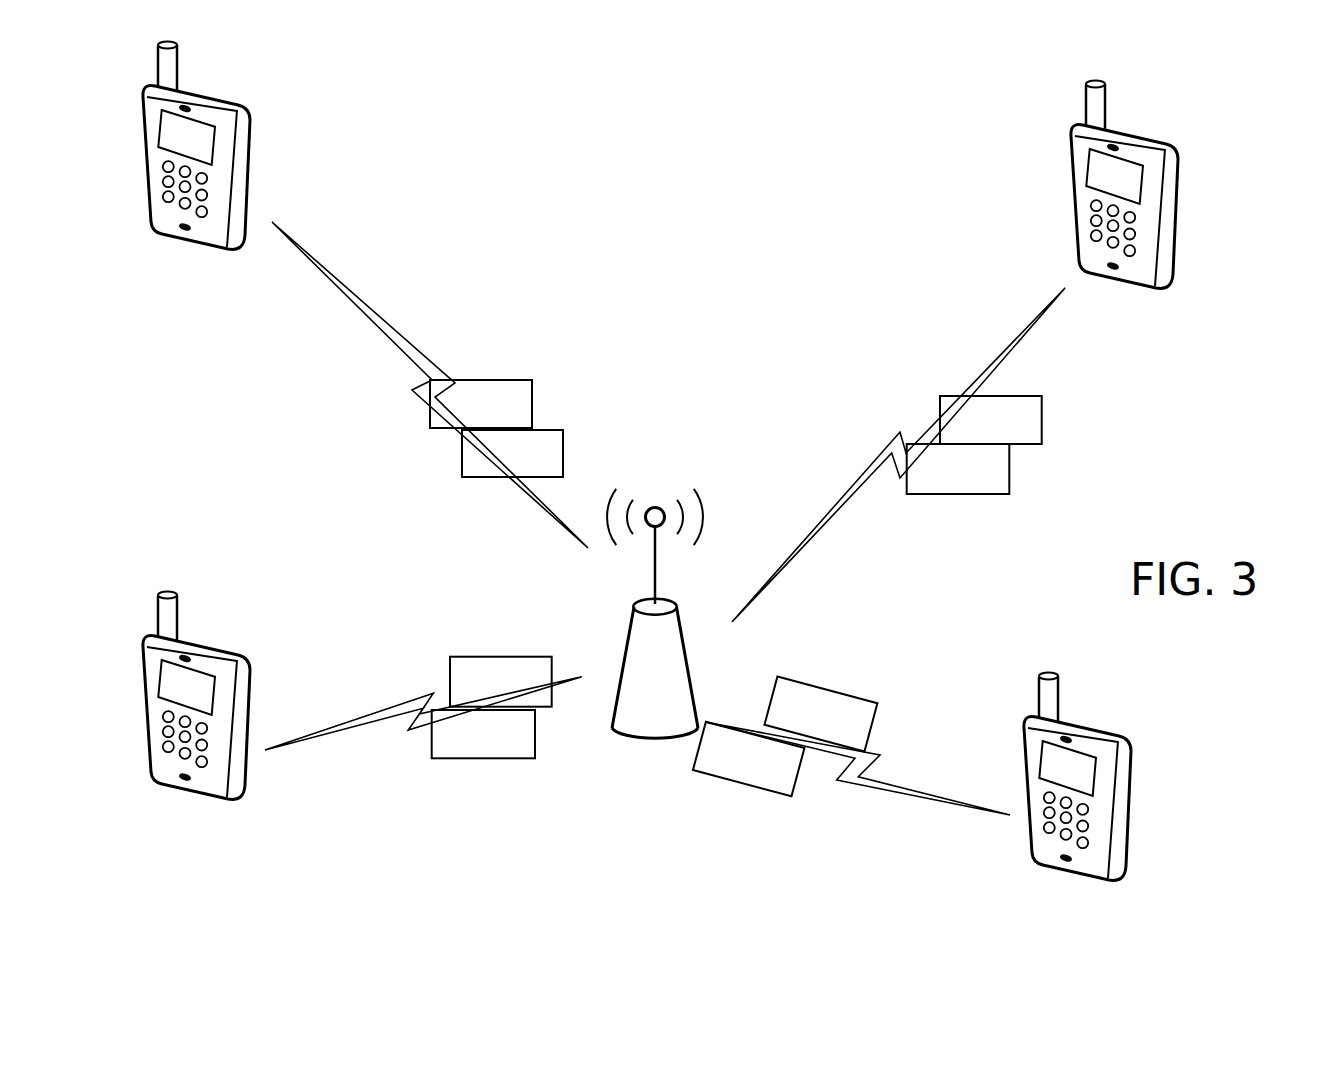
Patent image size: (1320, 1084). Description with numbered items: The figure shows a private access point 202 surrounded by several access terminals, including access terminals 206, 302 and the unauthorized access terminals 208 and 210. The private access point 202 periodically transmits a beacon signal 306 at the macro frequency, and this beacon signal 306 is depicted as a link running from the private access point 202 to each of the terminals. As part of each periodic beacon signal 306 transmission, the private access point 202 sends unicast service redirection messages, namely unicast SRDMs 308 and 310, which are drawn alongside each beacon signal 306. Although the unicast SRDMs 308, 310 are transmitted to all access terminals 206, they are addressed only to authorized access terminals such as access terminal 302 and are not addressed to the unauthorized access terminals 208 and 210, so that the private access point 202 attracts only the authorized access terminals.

The private access point 202 is at (680, 745).
The access terminal 206 is at (248, 243).
The unauthorized access terminal 208 is at (248, 793).
The unauthorized access terminal 210 is at (1176, 282).
The authorized access terminal 302 is at (1129, 874).
The beacon signal 306 is at (400, 334).
The unicast service redirection message 308 is at (736, 588).
The unicast service redirection message 310 is at (721, 594).